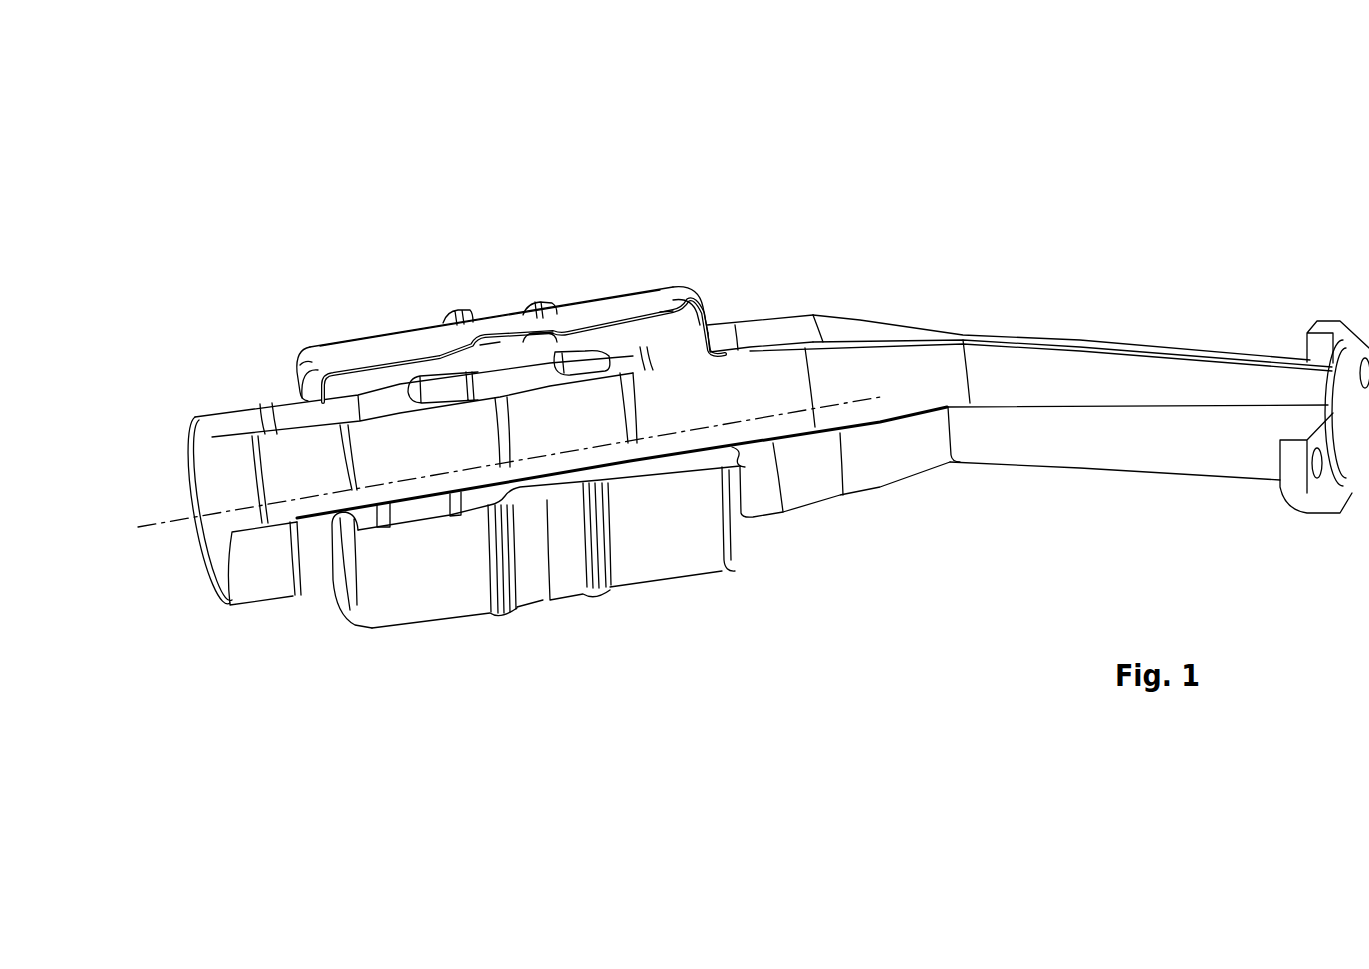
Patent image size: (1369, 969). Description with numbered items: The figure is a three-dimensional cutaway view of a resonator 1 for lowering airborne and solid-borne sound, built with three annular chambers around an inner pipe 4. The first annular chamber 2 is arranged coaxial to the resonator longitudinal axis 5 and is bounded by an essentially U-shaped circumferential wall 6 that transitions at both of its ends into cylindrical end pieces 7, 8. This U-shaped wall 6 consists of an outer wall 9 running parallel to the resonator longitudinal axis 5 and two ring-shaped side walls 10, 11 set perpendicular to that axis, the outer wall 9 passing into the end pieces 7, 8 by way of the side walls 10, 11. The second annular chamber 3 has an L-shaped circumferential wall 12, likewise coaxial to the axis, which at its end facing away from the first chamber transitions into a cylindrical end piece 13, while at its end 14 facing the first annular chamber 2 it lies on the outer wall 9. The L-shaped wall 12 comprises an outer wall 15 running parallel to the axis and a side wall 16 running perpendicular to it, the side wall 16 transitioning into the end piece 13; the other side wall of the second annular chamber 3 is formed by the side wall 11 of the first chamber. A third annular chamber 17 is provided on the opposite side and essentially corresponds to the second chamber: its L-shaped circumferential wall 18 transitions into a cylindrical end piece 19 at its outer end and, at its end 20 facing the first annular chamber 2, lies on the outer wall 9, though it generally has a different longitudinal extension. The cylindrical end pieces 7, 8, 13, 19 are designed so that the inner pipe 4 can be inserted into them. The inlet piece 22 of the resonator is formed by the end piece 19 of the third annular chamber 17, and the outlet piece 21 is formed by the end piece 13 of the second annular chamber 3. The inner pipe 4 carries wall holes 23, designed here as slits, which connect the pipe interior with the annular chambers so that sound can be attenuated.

The resonator 1 is at (262, 175).
The first annular chamber 2 is at (520, 340).
The second annular chamber 3 is at (370, 372).
The inner pipe 4 is at (778, 367).
The resonator longitudinal axis 5 is at (818, 407).
The U-shaped circumferential wall 6 is at (540, 345).
The cylindrical end piece 7 is at (610, 358).
The cylindrical end piece 8 is at (438, 380).
The outer wall 9 is at (497, 340).
The ring-shaped side wall 10 is at (587, 360).
The ring-shaped side wall 11 is at (465, 353).
The L-shaped circumferential wall 12 is at (358, 372).
The cylindrical end piece 13 is at (283, 412).
The end 14 is at (491, 350).
The outer wall 15 is at (397, 345).
The side wall 16 is at (307, 372).
The third annular chamber 17 is at (633, 333).
The L-shaped circumferential wall 18 is at (677, 292).
The cylindrical end piece 19 is at (732, 330).
The end 20 is at (528, 335).
The outlet piece 21 is at (272, 570).
The inlet piece 22 is at (762, 487).
The wall holes 23 is at (343, 460).